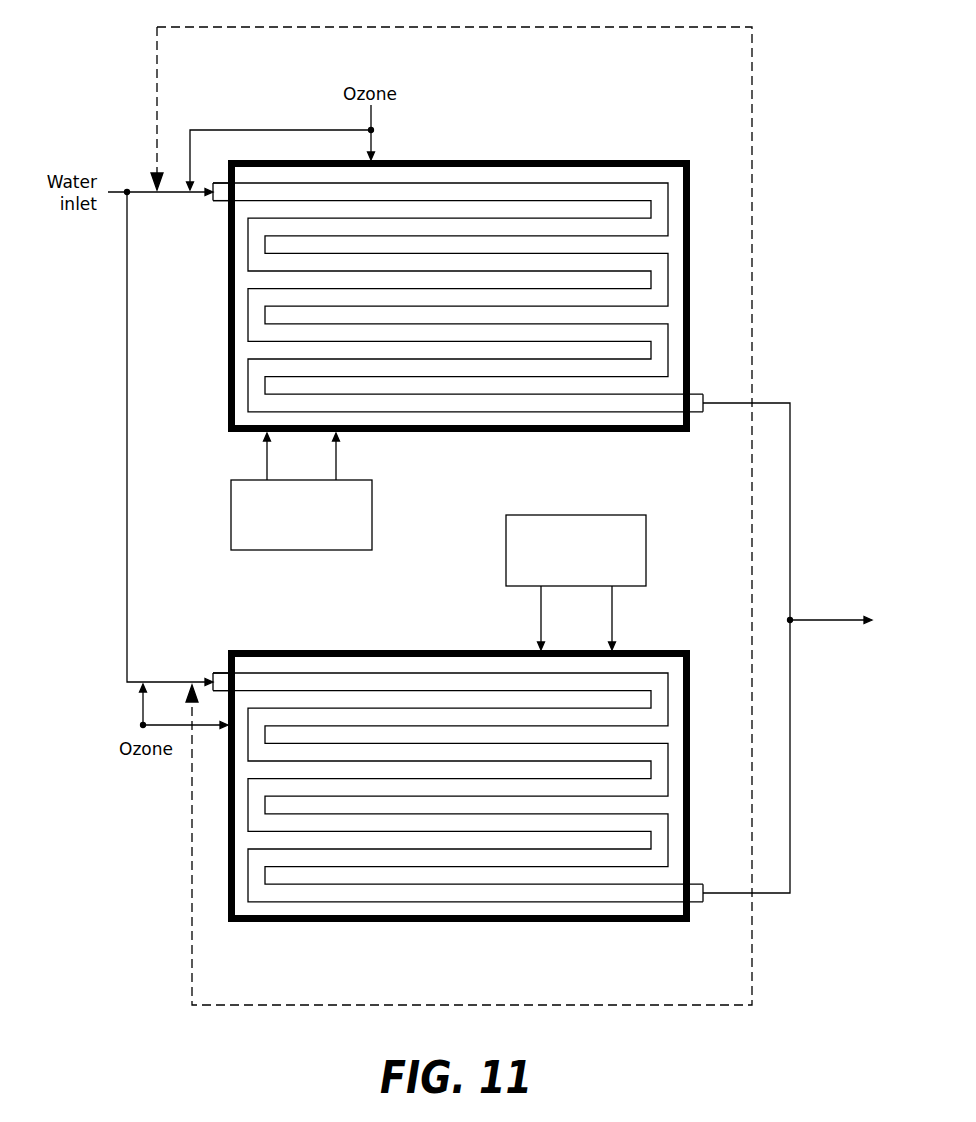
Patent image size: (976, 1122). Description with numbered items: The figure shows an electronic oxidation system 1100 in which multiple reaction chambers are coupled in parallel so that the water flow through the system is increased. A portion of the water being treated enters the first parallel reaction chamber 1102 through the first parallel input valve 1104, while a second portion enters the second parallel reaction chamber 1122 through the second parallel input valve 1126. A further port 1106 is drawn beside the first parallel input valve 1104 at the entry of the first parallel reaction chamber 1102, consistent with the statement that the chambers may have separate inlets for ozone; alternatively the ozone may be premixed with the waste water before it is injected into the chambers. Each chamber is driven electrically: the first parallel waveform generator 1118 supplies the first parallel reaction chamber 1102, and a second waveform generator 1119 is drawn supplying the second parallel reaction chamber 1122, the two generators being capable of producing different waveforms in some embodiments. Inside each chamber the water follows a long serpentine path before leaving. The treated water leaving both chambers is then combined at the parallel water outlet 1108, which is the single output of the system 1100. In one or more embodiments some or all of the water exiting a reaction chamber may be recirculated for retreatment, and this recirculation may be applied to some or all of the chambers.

The ozonated water generation system 1100 is at (99, 69).
The first parallel reaction chamber 1102 is at (422, 163).
The first parallel input valve 1104 is at (214, 184).
The ozone inlet port 1106 is at (213, 200).
The parallel water outlet 1108 is at (871, 616).
The first parallel waveform generator 1118 is at (375, 513).
The waveform generator 1119 is at (650, 550).
The second parallel reaction chamber 1122 is at (422, 653).
The second parallel input valve 1126 is at (212, 677).